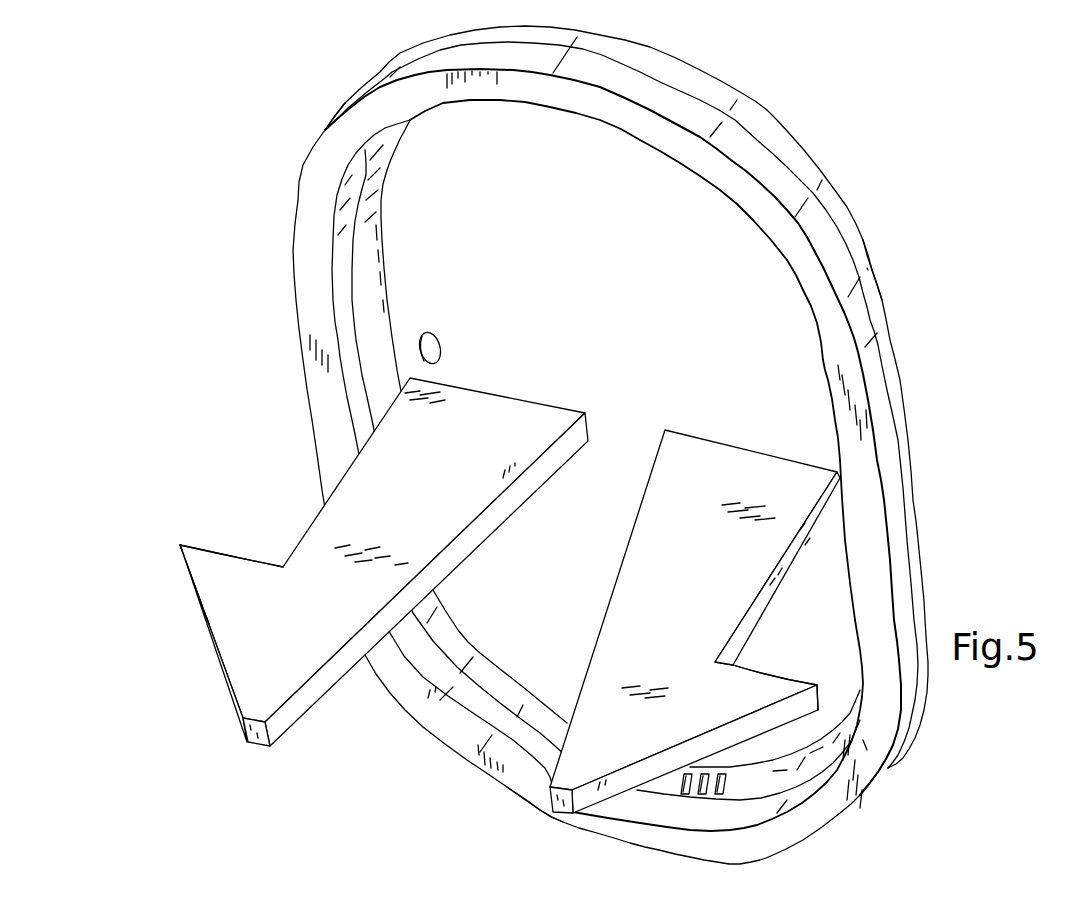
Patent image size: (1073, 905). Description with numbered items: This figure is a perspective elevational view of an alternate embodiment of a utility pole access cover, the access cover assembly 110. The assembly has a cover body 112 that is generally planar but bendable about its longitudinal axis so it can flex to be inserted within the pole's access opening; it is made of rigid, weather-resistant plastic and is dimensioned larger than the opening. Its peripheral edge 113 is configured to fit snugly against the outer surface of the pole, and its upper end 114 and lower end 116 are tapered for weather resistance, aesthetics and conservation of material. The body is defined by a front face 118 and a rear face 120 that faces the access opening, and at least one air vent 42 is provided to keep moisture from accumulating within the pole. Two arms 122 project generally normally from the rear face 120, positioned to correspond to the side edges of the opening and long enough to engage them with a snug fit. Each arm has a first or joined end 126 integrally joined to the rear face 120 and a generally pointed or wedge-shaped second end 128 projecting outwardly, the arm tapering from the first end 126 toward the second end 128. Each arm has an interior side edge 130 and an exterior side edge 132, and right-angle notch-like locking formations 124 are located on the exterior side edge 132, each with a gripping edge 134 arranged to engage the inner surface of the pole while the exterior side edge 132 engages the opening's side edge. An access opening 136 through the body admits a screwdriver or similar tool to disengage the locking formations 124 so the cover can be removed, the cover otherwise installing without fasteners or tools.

The access cover assembly 110 is at (253, 97).
The cover body 112 is at (763, 128).
The peripheral edge 113 is at (823, 820).
The upper end 114 is at (607, 60).
The lower end 116 is at (612, 833).
The front face 118 is at (888, 298).
The rear face 120 is at (614, 278).
The arms 122 is at (327, 553).
The locking formations 124 is at (273, 562).
The first or joined end 126 is at (473, 385).
The second end 128 is at (250, 742).
The interior side edge 130 is at (487, 517).
The exterior side edge 132 is at (330, 493).
The gripping edge 134 is at (180, 545).
The access opening 136 is at (440, 334).
The air vent 42 is at (720, 794).